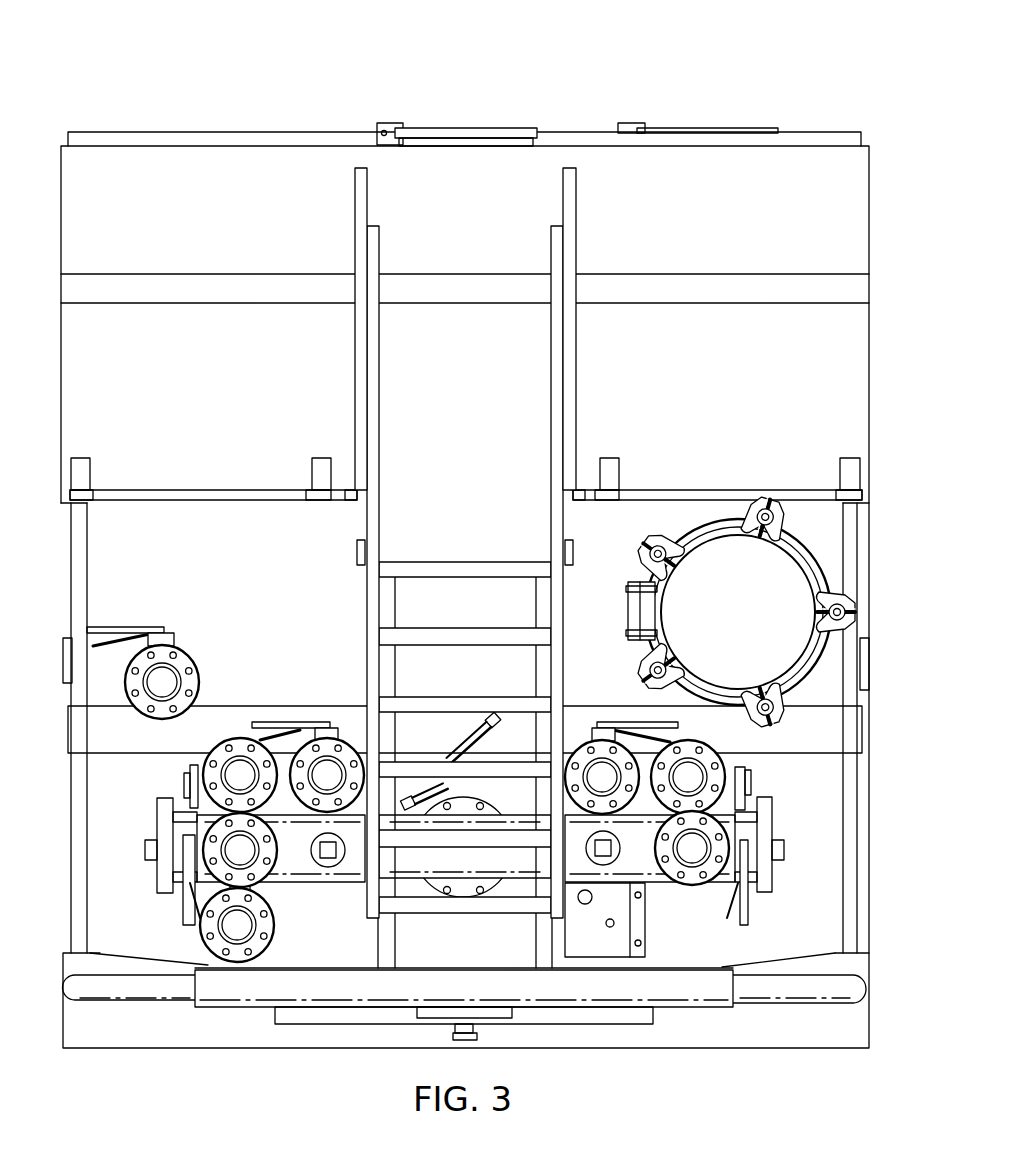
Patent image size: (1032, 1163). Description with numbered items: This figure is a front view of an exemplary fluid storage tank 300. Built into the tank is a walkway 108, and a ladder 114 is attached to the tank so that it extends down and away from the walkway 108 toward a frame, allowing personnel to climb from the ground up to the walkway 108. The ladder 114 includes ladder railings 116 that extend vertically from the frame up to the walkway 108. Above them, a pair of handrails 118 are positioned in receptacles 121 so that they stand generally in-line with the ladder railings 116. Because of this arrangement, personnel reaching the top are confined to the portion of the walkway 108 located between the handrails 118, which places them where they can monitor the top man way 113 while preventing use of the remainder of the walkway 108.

The fluid storage tank 300 is at (200, 66).
The top man way 113 is at (465, 128).
The handrails 118 is at (355, 198).
The receptacles 121 is at (354, 451).
The walkway 108 is at (214, 497).
The ladder railings 116 is at (430, 597).
The ladder 114 is at (380, 935).